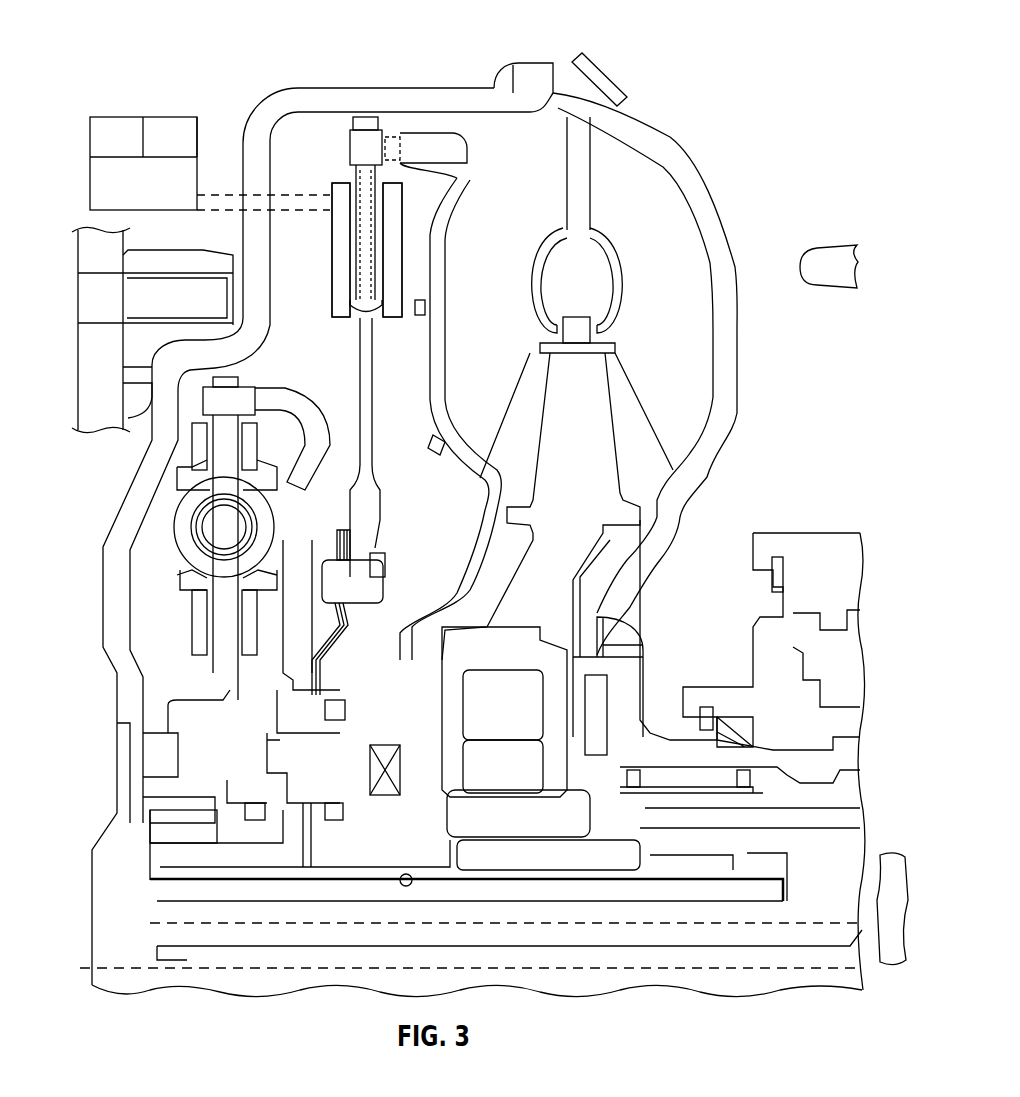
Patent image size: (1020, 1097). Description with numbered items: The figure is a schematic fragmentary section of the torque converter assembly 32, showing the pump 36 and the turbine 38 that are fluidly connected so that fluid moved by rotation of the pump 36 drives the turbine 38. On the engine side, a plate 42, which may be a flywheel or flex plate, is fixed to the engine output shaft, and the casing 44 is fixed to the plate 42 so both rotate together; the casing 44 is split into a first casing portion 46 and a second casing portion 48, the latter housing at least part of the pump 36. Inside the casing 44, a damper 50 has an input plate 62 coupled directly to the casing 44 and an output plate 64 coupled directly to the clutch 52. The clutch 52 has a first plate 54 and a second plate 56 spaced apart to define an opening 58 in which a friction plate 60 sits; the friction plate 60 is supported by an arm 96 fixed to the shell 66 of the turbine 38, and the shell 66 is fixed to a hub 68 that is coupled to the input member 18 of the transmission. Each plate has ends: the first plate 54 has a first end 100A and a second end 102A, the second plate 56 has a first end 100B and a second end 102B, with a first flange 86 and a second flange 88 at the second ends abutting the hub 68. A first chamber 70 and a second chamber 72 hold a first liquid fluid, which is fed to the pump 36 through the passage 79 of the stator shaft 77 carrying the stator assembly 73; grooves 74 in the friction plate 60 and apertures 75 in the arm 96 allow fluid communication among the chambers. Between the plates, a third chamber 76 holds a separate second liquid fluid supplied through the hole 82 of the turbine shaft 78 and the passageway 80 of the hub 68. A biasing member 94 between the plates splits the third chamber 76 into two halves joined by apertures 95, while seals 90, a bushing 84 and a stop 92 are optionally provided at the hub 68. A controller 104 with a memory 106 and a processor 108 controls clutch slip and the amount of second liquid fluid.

The input member 18 is at (887, 860).
The torque converter assembly 32 is at (86, 34).
The pump 36 is at (683, 277).
The turbine 38 is at (492, 367).
The plate 42 is at (88, 390).
The casing 44 is at (278, 106).
The first casing portion 46 is at (359, 519).
The second casing portion 48 is at (678, 153).
The damper 50 is at (155, 602).
The clutch 52 is at (335, 125).
The first plate 54 is at (345, 287).
The second plate 56 is at (393, 247).
The opening 58 is at (362, 323).
The friction plate 60 is at (358, 253).
The input plate 62 is at (155, 815).
The output plate 64 is at (262, 398).
The shell 66 is at (477, 482).
The hub 68 is at (317, 867).
The first chamber 70 is at (320, 167).
The second chamber 72 is at (453, 552).
The stator assembly 73 is at (518, 640).
The grooves 74 is at (383, 280).
The apertures 75 is at (413, 145).
The third chamber 76 is at (367, 350).
The stator shaft 77 is at (675, 843).
The turbine shaft 78 is at (163, 895).
The passage 79 is at (740, 820).
The passageway 80 is at (157, 857).
The hole 82 is at (163, 935).
The bushing 84 is at (162, 830).
The first flange 86 is at (247, 790).
The second flange 88 is at (317, 822).
The seals 90 is at (340, 812).
The stop 92 is at (217, 805).
The biasing member 94 is at (330, 640).
The apertures 95 is at (343, 650).
The arm 96 is at (433, 143).
The first end 100A is at (345, 188).
The first end 100B is at (397, 205).
The second end 102A is at (283, 753).
The second end 102B is at (370, 767).
The controller 104 is at (90, 185).
The memory 106 is at (137, 151).
The processor 108 is at (190, 151).